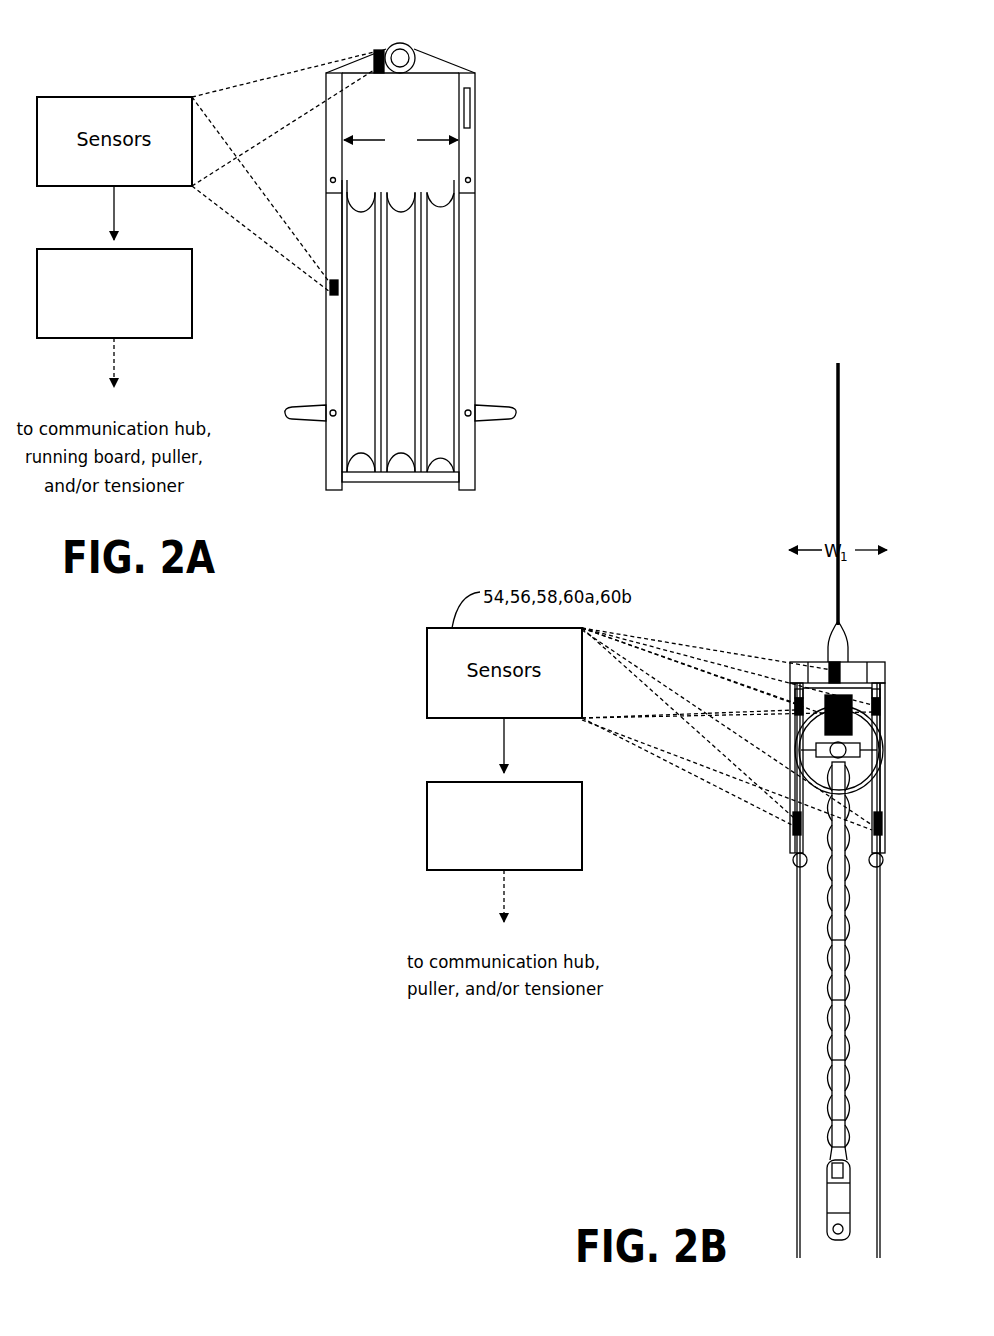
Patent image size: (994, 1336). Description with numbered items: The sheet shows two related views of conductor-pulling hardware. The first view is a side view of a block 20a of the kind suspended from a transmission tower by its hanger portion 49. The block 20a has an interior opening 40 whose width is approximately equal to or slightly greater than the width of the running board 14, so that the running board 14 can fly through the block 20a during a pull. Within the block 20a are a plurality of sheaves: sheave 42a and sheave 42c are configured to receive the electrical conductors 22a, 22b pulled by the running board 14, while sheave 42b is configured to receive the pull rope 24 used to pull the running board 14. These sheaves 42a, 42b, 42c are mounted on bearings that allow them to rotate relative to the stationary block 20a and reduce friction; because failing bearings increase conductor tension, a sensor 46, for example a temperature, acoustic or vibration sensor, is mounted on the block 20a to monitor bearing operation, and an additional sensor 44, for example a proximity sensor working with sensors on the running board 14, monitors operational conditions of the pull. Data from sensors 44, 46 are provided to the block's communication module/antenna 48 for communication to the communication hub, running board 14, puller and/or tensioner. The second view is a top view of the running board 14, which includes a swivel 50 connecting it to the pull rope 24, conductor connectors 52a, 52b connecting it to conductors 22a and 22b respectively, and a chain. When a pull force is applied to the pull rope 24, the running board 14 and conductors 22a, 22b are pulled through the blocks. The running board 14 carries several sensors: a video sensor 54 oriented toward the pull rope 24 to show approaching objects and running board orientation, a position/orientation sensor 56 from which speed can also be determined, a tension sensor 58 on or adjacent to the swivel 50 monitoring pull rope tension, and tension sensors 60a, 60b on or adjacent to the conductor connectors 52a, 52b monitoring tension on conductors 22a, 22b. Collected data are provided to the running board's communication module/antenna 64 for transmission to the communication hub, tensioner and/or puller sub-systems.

In FIG. 2A, the block 20a is at (568, 119).
In FIG. 2A, the opening 40 is at (450, 112).
In FIG. 2A, the sheave 42a is at (358, 222).
In FIG. 2A, the sheave 42b is at (403, 302).
In FIG. 2A, the sheave 42c is at (443, 375).
In FIG. 2A, the sensor 44 is at (378, 49).
In FIG. 2A, the sensor 46 is at (334, 296).
In FIG. 2A, the communication module/antenna 48 is at (192, 317).
In FIG. 2A, the hanger portion 49 is at (410, 46).
In FIG. 2B, the running board 14 is at (897, 714).
In FIG. 2B, the electrical conductor 22a is at (796, 960).
In FIG. 2B, the electrical conductor 22b is at (880, 975).
In FIG. 2B, the pull rope 24 is at (840, 473).
In FIG. 2B, the swivel 50 is at (832, 640).
In FIG. 2B, the conductor connector 52a is at (795, 853).
In FIG. 2B, the conductor connector 52b is at (880, 855).
In FIG. 2B, the video sensor 54 is at (850, 730).
In FIG. 2B, the position/orientation sensor 56 is at (793, 700).
In FIG. 2B, the tension sensor 58 is at (840, 676).
In FIG. 2B, the tension sensor 60a is at (793, 824).
In FIG. 2B, the tension sensor 60b is at (881, 826).
In FIG. 2B, the communication module/antenna 64 is at (582, 848).